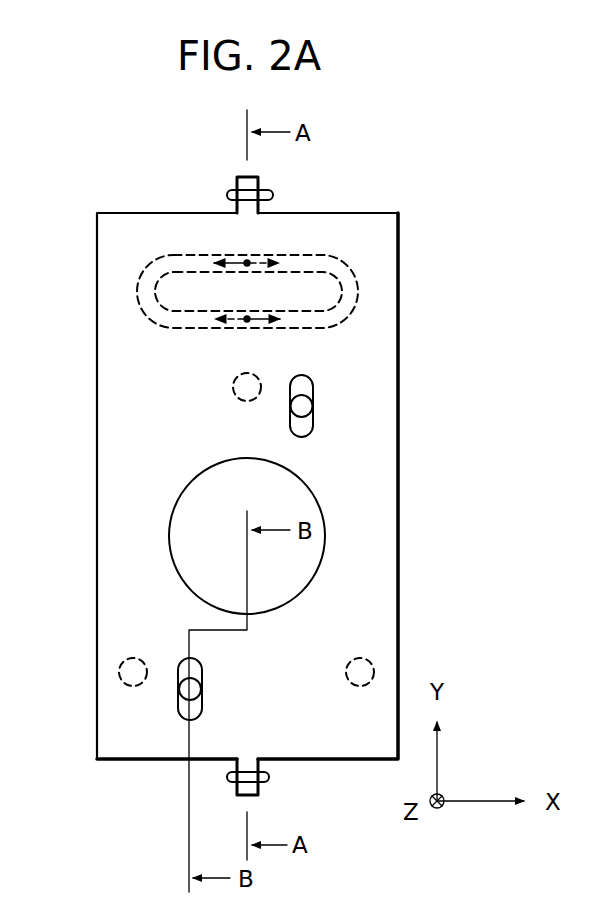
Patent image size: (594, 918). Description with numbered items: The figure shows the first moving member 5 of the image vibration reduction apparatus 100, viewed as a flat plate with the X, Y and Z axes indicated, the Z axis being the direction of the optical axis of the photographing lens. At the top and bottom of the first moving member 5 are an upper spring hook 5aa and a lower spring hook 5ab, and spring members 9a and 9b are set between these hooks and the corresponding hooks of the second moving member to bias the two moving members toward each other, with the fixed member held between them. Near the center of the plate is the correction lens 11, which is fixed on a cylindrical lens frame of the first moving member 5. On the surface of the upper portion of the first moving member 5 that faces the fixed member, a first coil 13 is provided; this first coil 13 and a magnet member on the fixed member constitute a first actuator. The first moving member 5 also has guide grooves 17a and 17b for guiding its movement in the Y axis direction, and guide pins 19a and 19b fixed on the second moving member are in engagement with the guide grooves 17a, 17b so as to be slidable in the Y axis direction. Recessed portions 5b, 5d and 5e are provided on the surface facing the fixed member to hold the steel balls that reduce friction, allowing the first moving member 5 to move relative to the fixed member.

The image vibration reduction apparatus 100 is at (396, 176).
The first moving member 5 is at (383, 340).
The upper spring hook 5aa is at (262, 182).
The lower spring hook 5ab is at (258, 790).
The spring member 9a is at (273, 195).
The spring member 9b is at (269, 777).
The recessed portion 5b is at (233, 384).
The recessed portion 5d is at (368, 667).
The recessed portion 5e is at (122, 665).
The first coil 13 is at (165, 258).
The correction lens 11 is at (191, 507).
The guide groove 17a is at (313, 383).
The guide groove 17b is at (178, 706).
The guide pin 19a is at (305, 406).
The guide pin 19b is at (187, 689).